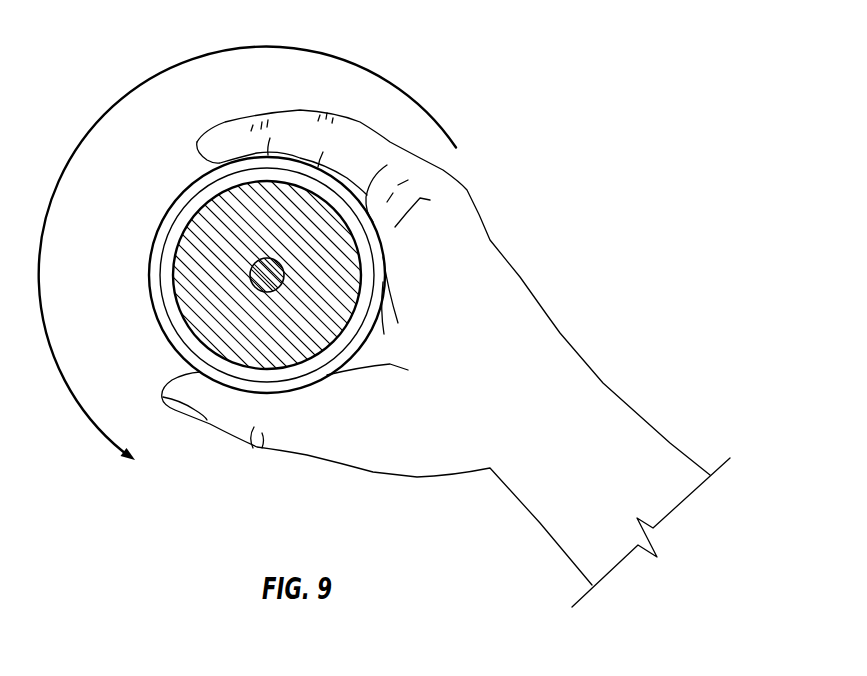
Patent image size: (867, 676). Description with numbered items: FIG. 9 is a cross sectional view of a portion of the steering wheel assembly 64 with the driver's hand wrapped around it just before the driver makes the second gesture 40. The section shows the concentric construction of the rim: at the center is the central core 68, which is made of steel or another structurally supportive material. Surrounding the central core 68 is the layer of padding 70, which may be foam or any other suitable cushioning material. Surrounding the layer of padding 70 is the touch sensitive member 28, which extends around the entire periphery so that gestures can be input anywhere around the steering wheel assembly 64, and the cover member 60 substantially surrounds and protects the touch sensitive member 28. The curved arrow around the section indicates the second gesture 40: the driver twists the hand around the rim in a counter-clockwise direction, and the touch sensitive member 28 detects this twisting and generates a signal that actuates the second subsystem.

The touch sensitive member 28 is at (290, 278).
The second gesture 40 is at (240, 48).
The cover member 60 is at (193, 179).
The steering wheel assembly 64 is at (152, 228).
The central core 68 is at (262, 275).
The layer of padding 70 is at (230, 330).